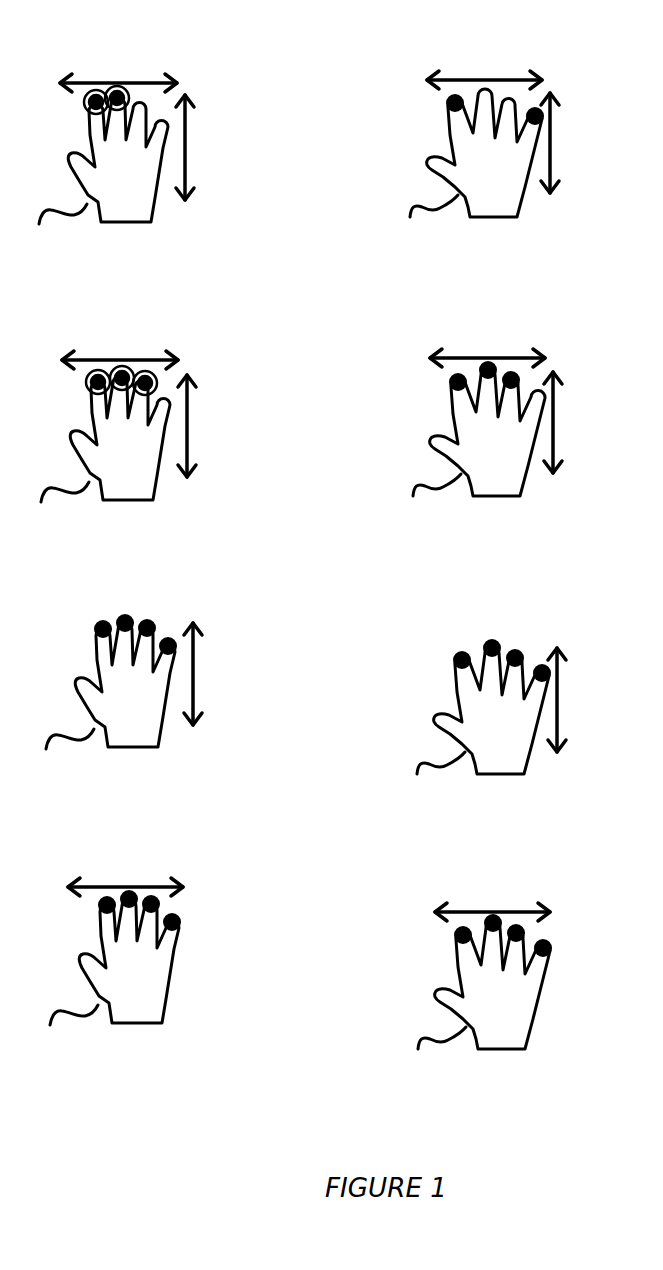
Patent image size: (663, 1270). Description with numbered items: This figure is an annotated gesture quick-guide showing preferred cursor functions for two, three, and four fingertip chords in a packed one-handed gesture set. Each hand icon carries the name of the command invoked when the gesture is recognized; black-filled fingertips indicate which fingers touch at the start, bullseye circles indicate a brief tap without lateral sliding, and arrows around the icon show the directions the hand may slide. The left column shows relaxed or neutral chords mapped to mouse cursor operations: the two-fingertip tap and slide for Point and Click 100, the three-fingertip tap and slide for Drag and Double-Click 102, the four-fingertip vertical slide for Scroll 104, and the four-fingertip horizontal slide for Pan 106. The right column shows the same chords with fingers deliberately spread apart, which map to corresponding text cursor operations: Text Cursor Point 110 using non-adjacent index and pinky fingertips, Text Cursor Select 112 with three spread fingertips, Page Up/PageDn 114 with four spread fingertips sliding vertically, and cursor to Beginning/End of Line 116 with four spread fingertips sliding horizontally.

The Point and Click 100 is at (116, 133).
The Drag and Double-Click 102 is at (118, 412).
The Scroll 104 is at (124, 676).
The Pan 106 is at (116, 951).
The Text Cursor Point 110 is at (484, 130).
The Text Cursor Select 112 is at (487, 408).
The Page Up/PageDn 114 is at (491, 686).
The Beginning/End of Line 116 is at (490, 961).